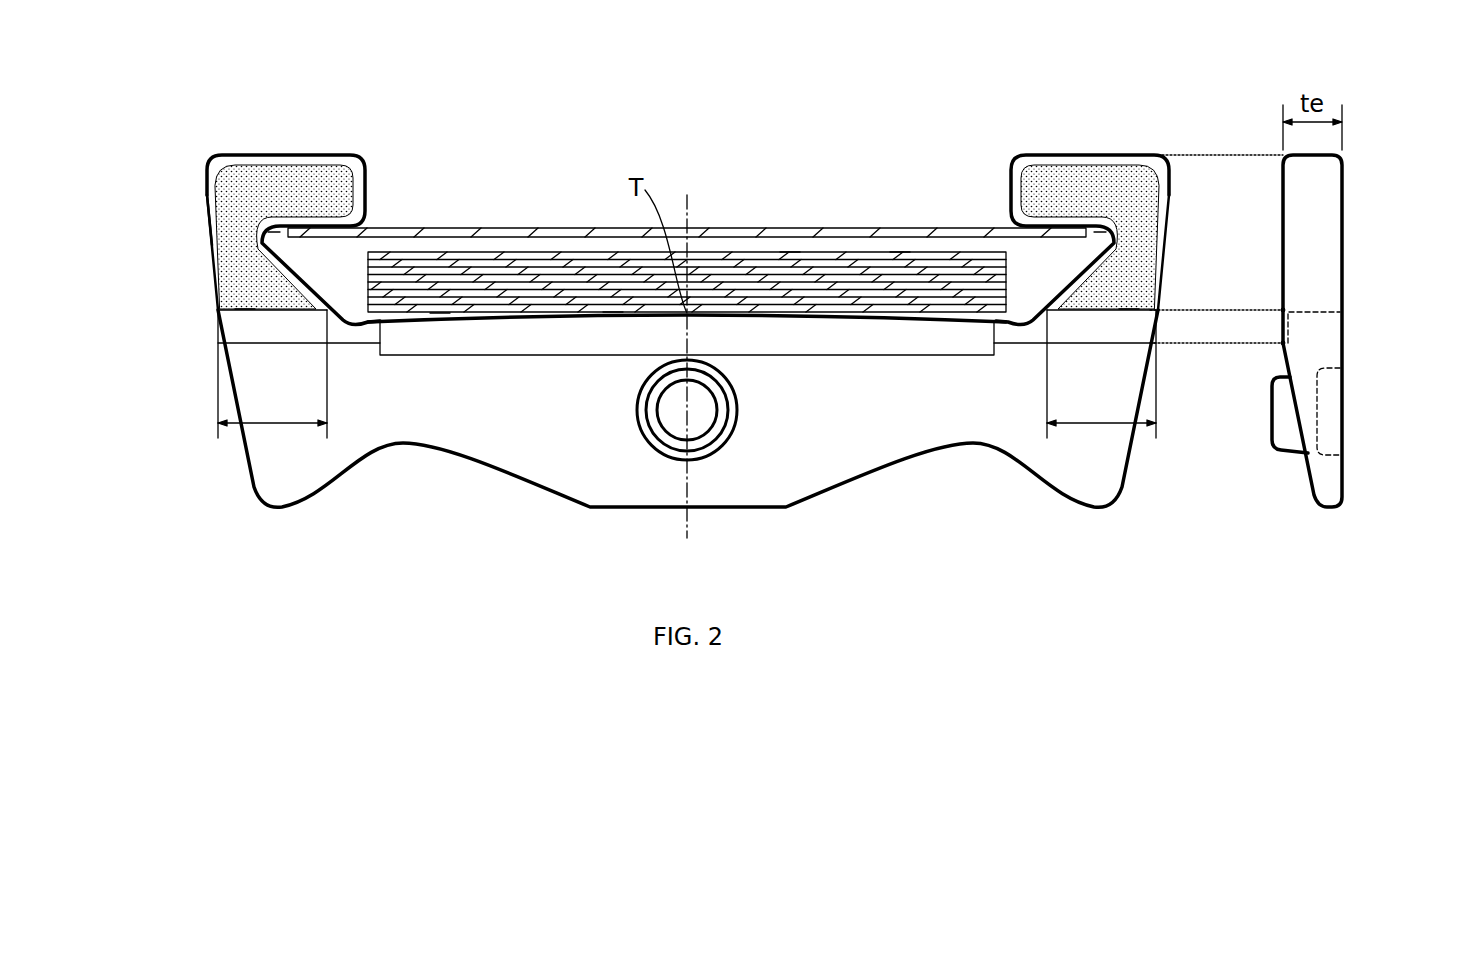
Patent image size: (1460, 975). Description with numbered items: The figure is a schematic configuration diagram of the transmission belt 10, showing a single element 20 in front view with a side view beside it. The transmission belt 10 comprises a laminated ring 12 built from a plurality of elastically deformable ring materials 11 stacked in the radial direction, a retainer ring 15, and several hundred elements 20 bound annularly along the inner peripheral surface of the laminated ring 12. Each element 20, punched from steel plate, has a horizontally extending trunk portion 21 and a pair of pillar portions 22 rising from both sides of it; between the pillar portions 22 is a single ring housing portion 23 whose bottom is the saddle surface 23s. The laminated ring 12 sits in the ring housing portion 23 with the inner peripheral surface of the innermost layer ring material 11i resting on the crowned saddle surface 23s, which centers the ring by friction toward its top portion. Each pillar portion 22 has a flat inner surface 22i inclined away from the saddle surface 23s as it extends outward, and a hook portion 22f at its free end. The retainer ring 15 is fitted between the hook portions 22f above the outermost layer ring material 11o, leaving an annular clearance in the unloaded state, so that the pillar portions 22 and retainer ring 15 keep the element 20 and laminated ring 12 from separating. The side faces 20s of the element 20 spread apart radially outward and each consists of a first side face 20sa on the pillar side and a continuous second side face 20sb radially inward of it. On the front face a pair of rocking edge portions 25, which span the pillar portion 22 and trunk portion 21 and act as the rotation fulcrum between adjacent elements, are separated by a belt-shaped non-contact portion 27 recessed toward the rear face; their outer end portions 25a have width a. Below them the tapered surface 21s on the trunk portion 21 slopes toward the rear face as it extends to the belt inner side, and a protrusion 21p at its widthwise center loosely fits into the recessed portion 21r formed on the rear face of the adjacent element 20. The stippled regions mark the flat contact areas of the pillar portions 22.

The transmission belt 10 is at (733, 195).
The ring material 11 is at (1010, 295).
The outermost layer ring material 11o is at (790, 258).
The innermost layer ring material 11i is at (613, 315).
The laminated ring 12 is at (900, 252).
The retainer ring 15 is at (523, 232).
The element 20 is at (485, 472).
The side face 20s is at (110, 237).
The first side face 20sa is at (207, 246).
The second side face 20sb is at (230, 343).
The trunk portion 21 is at (795, 447).
The tapered surface 21s is at (466, 431).
The protrusion 21p is at (663, 412).
The recessed portion 21r is at (1330, 400).
The pillar portion 22 is at (208, 193).
The inner surface 22i is at (288, 270).
The hook portion 22f is at (357, 187).
The ring housing portion 23 is at (321, 286).
The saddle surface 23s is at (440, 302).
The rocking edge portion 25 is at (343, 332).
The end portion 25a is at (243, 307).
The non-contact portion 27 is at (838, 330).